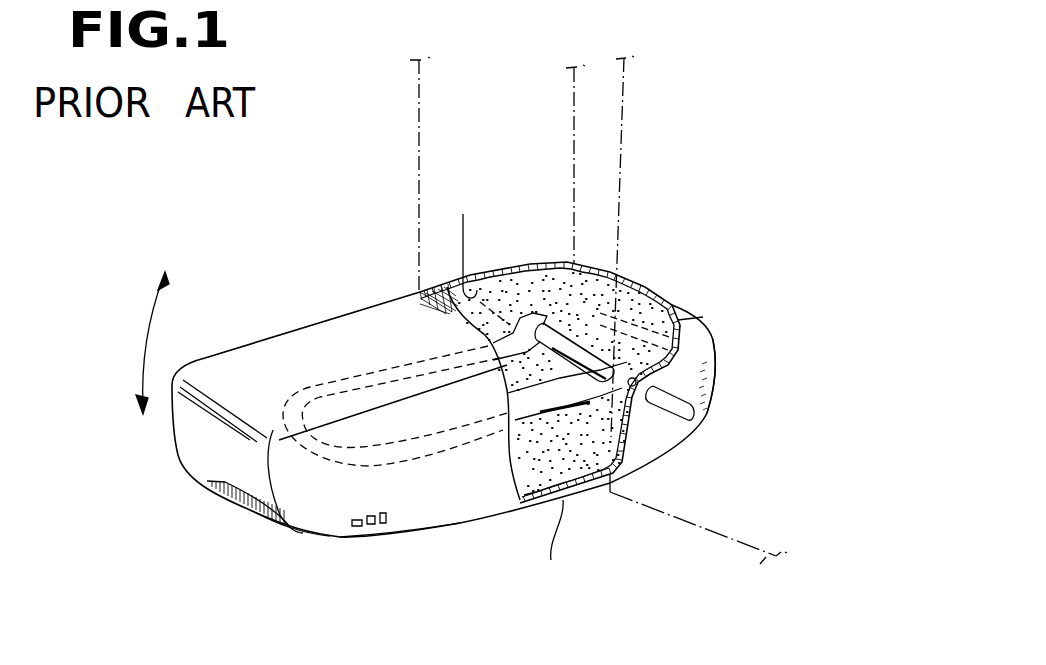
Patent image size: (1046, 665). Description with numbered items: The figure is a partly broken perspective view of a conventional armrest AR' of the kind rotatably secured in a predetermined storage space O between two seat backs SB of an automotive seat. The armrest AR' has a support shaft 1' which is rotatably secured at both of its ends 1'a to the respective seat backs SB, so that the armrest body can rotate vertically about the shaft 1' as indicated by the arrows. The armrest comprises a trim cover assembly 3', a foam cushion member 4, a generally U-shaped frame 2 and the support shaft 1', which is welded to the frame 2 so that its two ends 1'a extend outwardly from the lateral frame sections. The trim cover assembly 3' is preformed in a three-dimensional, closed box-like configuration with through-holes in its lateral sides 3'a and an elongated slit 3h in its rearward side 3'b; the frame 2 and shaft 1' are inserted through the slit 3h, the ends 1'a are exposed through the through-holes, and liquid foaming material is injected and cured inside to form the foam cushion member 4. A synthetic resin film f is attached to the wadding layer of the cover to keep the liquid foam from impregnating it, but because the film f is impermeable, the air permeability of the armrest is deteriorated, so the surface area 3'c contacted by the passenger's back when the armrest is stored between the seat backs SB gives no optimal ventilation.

The trim cover assembly 3' is at (443, 384).
The lateral side 3'a is at (400, 559).
The rearward side 3'b is at (757, 344).
The surface area 3'c is at (290, 562).
The elongated slit 3h is at (640, 292).
The frame 2 is at (510, 455).
The support shaft 1' is at (564, 298).
The end of support shaft 1'a is at (600, 348).
The foam cushion member 4 is at (573, 453).
The synthetic resin film f is at (509, 384).
The seat back SB is at (441, 146).
The storage space O is at (624, 168).
The armrest AR' is at (227, 320).